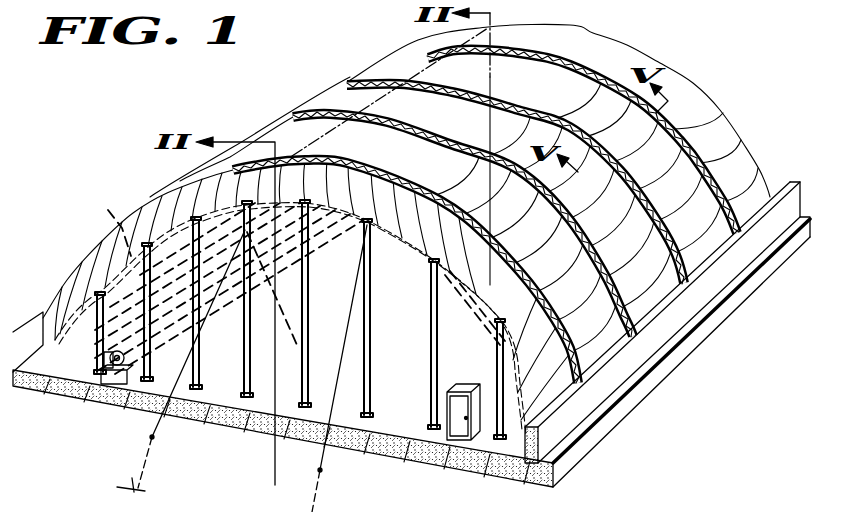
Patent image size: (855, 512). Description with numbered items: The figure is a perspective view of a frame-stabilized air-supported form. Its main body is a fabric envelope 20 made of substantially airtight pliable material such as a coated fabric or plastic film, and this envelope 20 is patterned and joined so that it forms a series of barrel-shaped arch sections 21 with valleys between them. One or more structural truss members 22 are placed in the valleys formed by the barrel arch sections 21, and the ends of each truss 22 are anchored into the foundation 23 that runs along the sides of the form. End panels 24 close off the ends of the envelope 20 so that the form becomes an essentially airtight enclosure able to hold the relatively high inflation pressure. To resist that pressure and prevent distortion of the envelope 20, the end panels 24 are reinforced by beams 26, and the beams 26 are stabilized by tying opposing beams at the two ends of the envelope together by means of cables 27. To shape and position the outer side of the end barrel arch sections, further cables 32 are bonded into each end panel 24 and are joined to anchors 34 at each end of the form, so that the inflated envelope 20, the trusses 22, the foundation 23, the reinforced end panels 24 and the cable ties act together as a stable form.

The fabric envelope 20 is at (210, 188).
The barrel-shaped arch sections 21 is at (288, 112).
The structural truss members 22 is at (449, 190).
The foundation 23 is at (553, 472).
The end panels 24 is at (227, 360).
The beams 26 is at (366, 374).
The cables 27 is at (372, 250).
The cables 32 is at (95, 225).
The anchors 34 is at (66, 393).